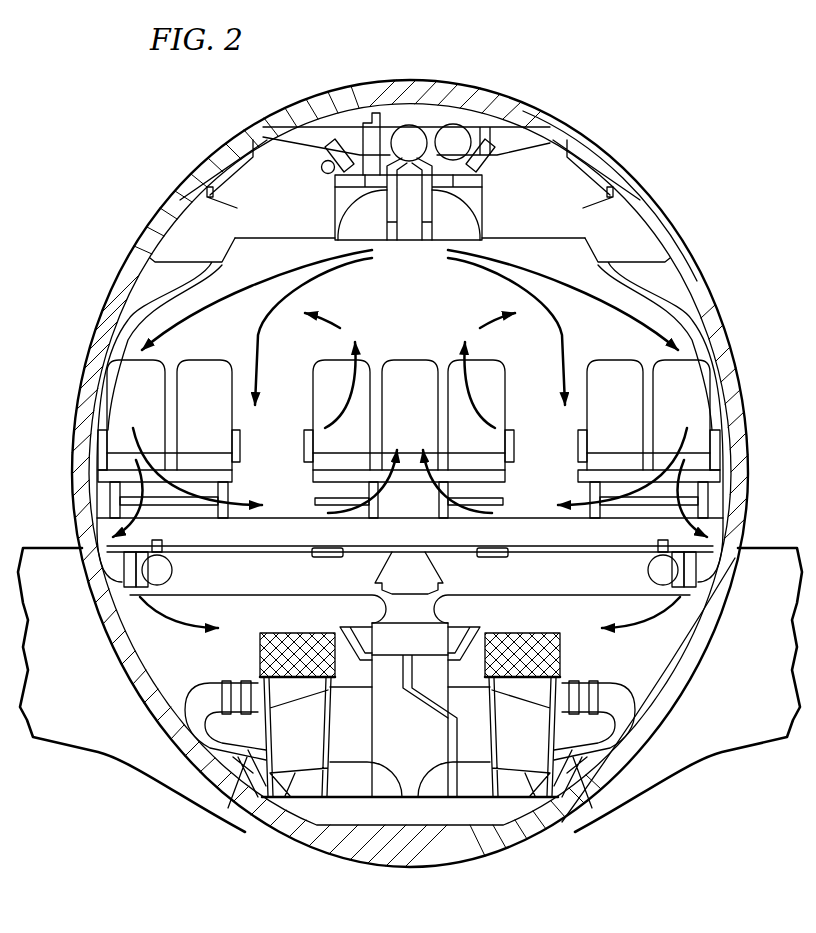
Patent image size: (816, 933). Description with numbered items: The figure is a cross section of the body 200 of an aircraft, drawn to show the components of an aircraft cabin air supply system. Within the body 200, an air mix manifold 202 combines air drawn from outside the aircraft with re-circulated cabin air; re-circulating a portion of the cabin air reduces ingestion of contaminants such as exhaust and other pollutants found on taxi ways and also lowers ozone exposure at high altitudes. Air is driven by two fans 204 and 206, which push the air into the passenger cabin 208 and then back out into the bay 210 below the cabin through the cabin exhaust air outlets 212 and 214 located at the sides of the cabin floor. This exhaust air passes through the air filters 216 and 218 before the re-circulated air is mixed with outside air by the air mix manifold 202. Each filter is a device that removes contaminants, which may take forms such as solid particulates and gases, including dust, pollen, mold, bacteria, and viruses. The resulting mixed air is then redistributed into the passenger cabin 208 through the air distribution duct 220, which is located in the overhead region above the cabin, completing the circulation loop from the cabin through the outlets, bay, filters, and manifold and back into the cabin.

The body 200 is at (483, 83).
The air mix manifold 202 is at (413, 738).
The fan 204 is at (257, 780).
The fan 206 is at (567, 767).
The passenger cabin 208 is at (425, 309).
The bay 210 is at (680, 627).
The cabin exhaust air outlet 212 is at (712, 527).
The cabin exhaust air outlet 214 is at (105, 527).
The air filter 216 is at (258, 652).
The air filter 218 is at (563, 653).
The air distribution duct 220 is at (410, 125).